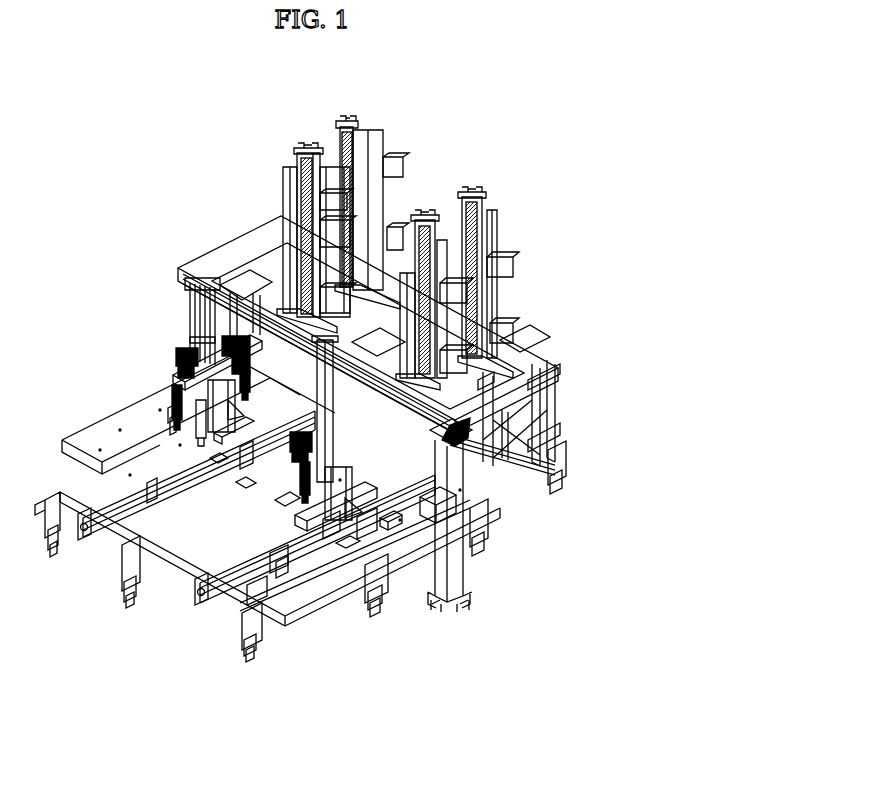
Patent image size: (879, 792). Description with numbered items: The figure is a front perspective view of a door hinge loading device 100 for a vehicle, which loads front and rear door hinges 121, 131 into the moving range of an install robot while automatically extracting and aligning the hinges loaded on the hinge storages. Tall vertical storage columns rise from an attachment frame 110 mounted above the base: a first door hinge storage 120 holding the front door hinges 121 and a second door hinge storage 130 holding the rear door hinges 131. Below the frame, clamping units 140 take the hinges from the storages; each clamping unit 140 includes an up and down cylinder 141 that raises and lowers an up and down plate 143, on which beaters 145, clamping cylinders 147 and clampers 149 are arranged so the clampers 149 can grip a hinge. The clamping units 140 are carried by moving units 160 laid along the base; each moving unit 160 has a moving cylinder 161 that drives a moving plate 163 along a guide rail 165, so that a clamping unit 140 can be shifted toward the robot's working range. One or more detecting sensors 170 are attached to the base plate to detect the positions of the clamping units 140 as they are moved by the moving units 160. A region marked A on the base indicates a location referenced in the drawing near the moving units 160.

The door hinge loading device 100 is at (269, 71).
The attachment frame 110 is at (540, 360).
The first door hinge storage 120 is at (483, 187).
The front door hinge 121 is at (423, 220).
The second door hinge storage 130 is at (305, 145).
The rear door hinge 131 is at (298, 160).
The clamping unit 140 is at (157, 392).
The up and down cylinder 141 is at (123, 520).
The up and down plate 143 is at (205, 395).
The beater 145 is at (150, 398).
The clamping cylinder 147 is at (173, 412).
The clamper 149 is at (175, 375).
The moving unit 160 is at (203, 482).
The moving cylinder 161 is at (83, 537).
The moving plate 163 is at (382, 528).
The guide rail 165 is at (288, 335).
The detecting sensor 170 is at (392, 595).
The region A is at (342, 548).